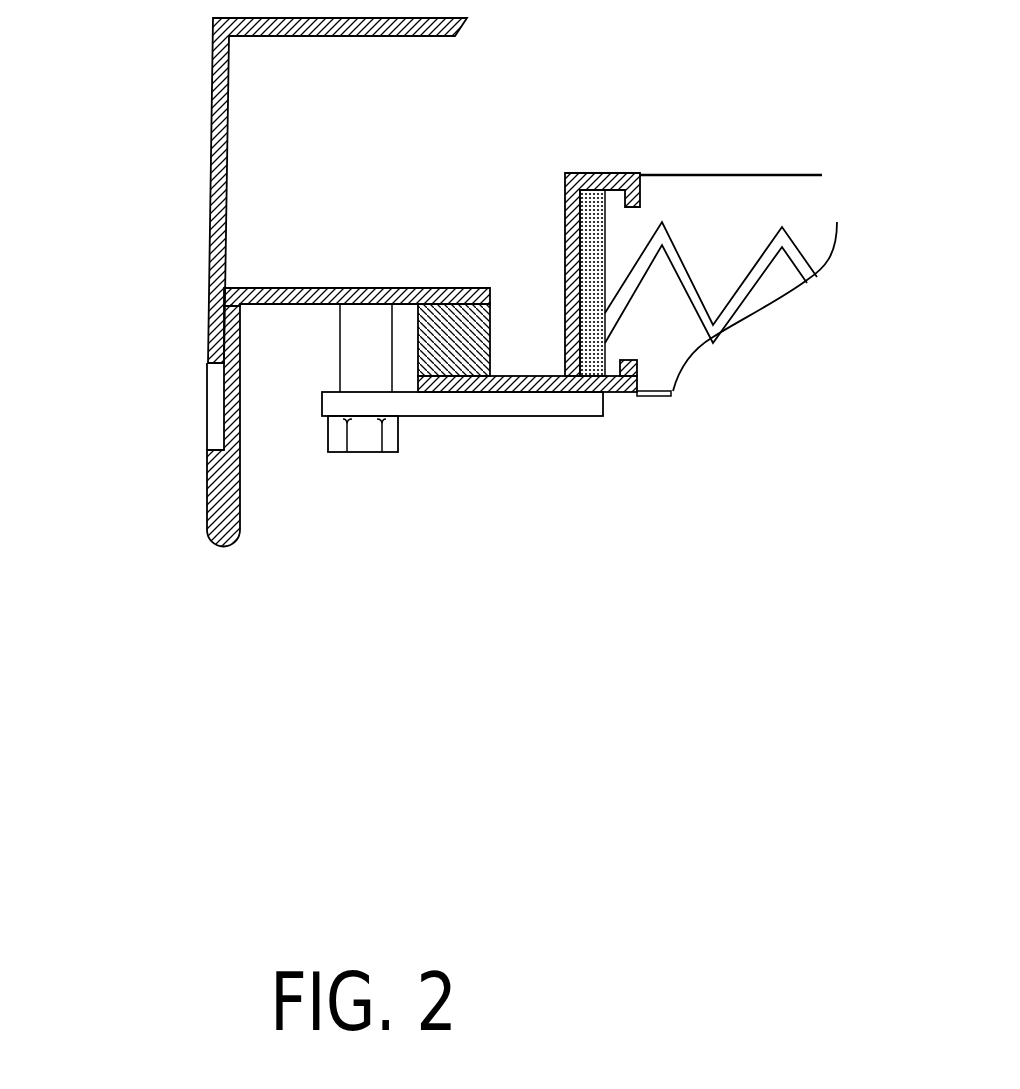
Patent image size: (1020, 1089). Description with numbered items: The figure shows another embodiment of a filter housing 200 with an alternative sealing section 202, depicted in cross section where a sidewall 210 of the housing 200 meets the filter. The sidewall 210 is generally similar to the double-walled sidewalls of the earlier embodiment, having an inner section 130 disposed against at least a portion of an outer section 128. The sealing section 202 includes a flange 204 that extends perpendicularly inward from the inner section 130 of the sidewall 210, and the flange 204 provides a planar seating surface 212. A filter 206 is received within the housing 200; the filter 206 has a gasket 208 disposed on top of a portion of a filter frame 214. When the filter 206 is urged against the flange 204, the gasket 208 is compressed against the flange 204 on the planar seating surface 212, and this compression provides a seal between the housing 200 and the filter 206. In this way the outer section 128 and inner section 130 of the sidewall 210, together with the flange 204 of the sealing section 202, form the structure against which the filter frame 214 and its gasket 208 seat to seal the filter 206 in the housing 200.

The housing 200 is at (183, 145).
The outer section 128 is at (208, 250).
The inner section 130 is at (240, 488).
The sealing section 202 is at (285, 287).
The flange 204 is at (483, 288).
The filter 206 is at (588, 170).
The gasket 208 is at (673, 391).
The sidewall 210 is at (208, 333).
The planar seating surface 212 is at (462, 288).
The filter frame 214 is at (466, 343).